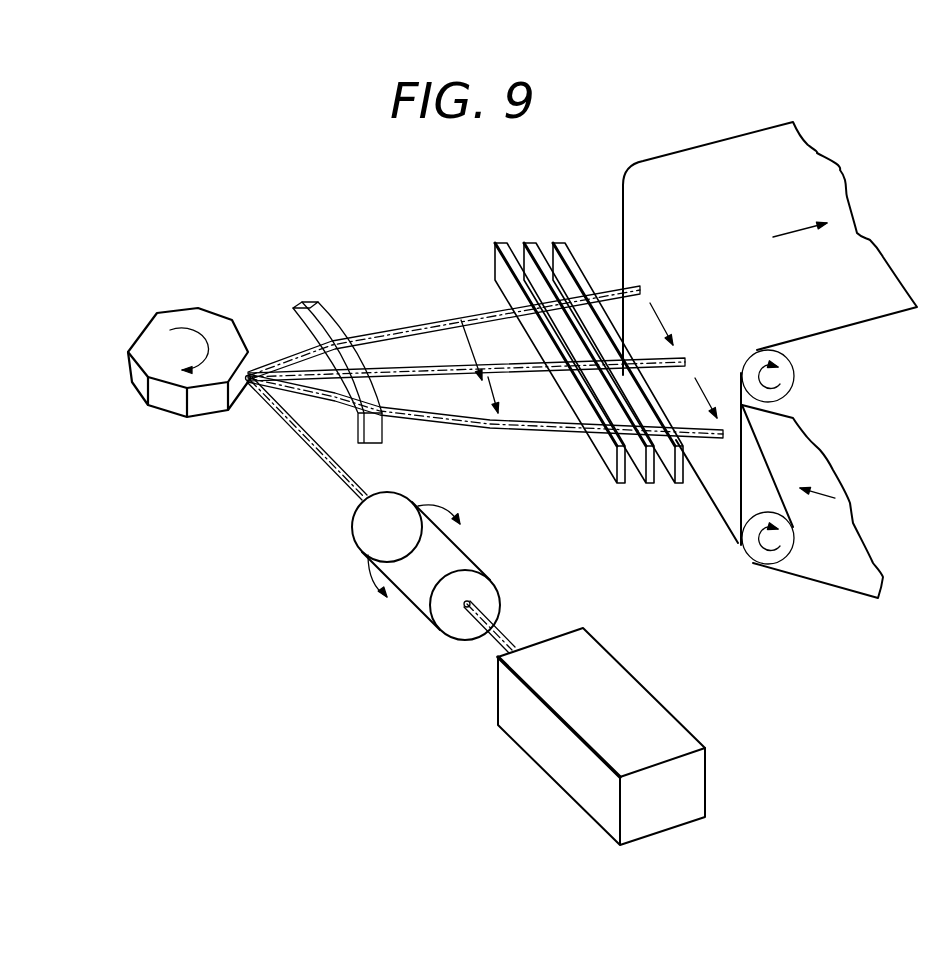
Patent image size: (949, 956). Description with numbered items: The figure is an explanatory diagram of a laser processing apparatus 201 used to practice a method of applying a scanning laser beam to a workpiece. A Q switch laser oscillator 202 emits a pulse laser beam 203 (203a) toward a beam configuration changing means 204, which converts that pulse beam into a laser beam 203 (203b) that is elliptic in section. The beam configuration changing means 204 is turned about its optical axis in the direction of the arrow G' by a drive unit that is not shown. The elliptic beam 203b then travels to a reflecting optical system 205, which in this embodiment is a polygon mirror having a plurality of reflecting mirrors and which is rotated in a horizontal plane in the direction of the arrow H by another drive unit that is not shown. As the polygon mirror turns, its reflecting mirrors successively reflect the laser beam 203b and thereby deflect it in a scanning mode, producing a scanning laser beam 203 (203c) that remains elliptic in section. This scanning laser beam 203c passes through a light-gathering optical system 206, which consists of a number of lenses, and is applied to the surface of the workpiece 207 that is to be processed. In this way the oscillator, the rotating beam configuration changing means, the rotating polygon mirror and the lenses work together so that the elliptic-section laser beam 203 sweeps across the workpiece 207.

The laser processing apparatus 201 is at (360, 284).
The Q switch laser oscillator 202 is at (552, 758).
The laser beam 203 is at (455, 433).
The pulse laser beam 203a is at (513, 641).
The laser beam elliptic in section 203b is at (293, 430).
The scanning laser beam 203c is at (273, 355).
The beam configuration changing means 204 is at (417, 587).
The reflecting optical system 205 is at (160, 398).
The light-gathering optical system 206 is at (343, 443).
The workpiece 207 is at (725, 485).
The arrow H (direction of rotation of reflecting optical system) H is at (198, 323).
The arrow G' (direction of turning of beam configuration changing means) G' is at (451, 503).